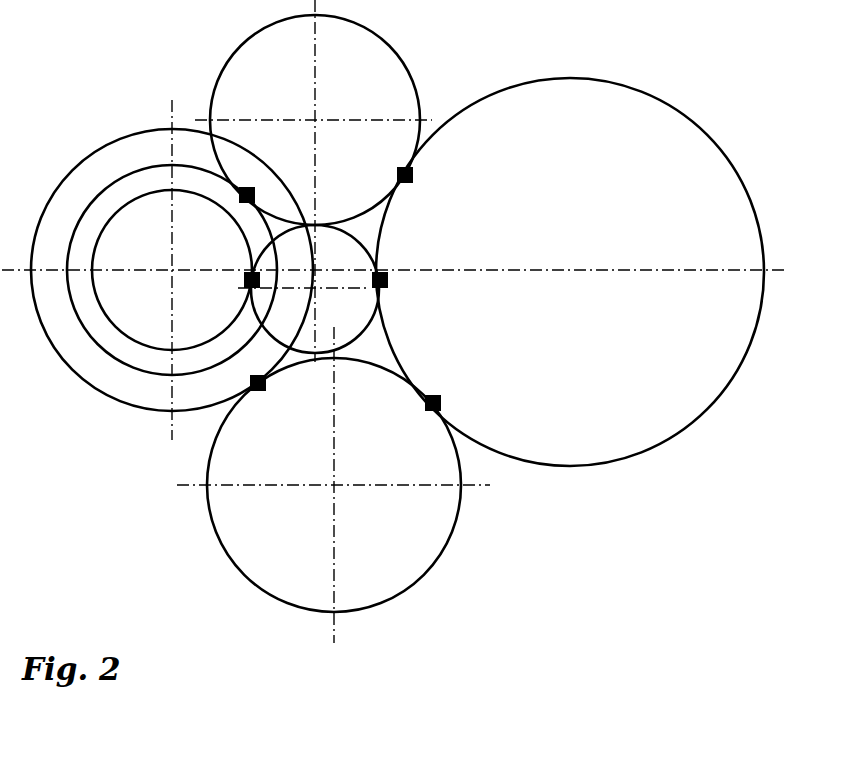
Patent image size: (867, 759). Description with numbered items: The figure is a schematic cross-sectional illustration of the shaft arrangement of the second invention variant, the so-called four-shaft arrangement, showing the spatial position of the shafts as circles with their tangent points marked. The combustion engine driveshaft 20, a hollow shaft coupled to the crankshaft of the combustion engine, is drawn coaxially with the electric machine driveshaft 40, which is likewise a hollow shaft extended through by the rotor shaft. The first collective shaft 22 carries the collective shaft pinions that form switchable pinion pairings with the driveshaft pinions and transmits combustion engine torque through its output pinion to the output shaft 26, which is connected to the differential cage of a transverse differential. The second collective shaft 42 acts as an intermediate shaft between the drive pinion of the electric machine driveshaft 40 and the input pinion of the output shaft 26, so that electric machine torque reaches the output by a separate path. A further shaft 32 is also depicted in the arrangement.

The combustion engine driveshaft 20 is at (172, 308).
The electric machine driveshaft 40 is at (153, 307).
The upper roller 32 is at (378, 82).
The output shaft 26 is at (657, 221).
The second collective shaft 42 is at (347, 310).
The first collective shaft 22 is at (412, 545).